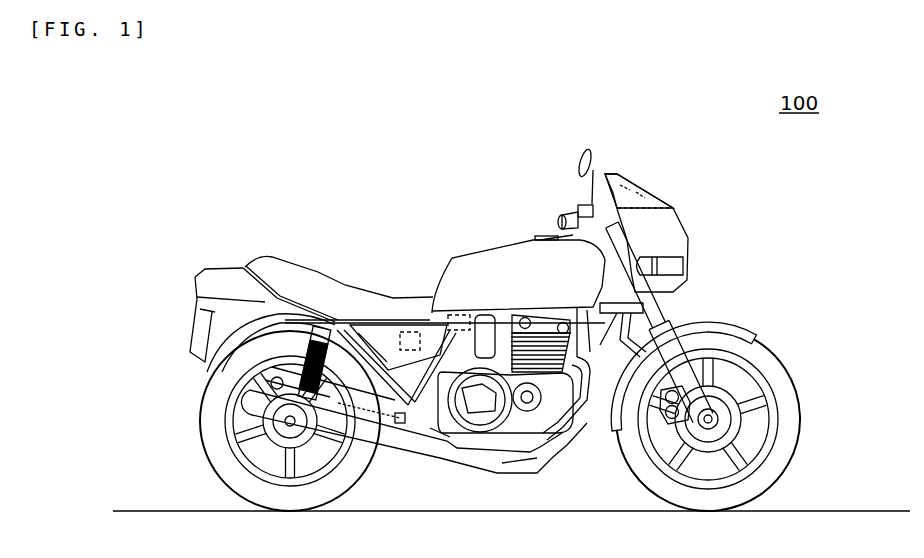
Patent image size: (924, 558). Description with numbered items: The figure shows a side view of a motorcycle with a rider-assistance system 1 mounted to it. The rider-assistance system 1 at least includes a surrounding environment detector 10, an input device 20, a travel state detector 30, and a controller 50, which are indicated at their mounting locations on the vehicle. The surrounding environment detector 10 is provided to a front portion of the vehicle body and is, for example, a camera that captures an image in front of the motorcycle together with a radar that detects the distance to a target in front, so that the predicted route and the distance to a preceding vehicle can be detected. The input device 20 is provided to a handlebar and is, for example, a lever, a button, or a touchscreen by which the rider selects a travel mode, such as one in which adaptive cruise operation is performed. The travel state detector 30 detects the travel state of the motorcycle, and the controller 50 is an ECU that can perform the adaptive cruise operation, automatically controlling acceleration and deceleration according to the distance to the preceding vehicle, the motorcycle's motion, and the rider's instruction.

The rider-assistance system 1 is at (309, 173).
The surrounding environment detector 10 is at (647, 193).
The input device 20 is at (623, 180).
The travel state detector 30 is at (463, 327).
The controller 50 is at (410, 330).